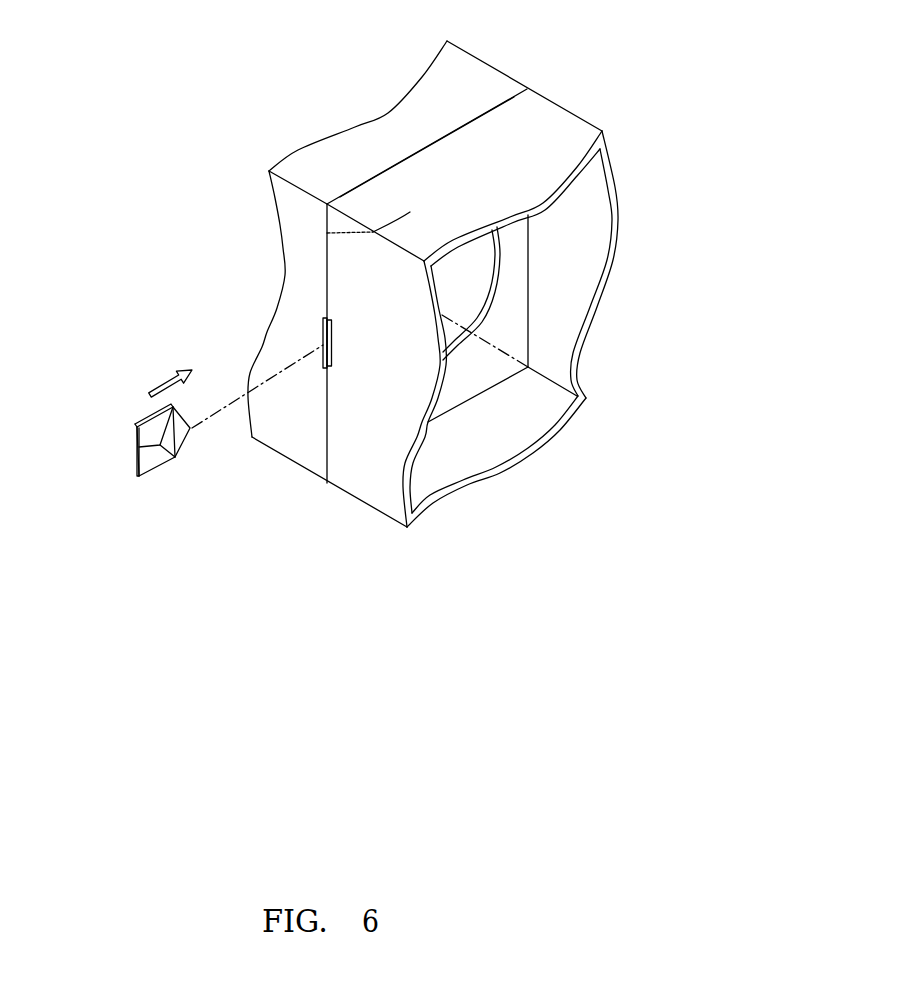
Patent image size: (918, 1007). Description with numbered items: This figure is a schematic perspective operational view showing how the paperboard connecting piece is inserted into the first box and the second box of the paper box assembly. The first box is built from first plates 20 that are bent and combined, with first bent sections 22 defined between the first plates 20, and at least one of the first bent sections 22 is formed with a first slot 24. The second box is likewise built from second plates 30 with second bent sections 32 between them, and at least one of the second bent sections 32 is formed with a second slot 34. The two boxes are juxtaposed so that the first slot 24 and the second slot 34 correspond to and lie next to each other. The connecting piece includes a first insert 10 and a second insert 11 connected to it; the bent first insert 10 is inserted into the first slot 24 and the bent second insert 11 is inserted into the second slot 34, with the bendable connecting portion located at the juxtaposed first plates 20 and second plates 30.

The first insert 10 is at (137, 437).
The second insert 11 is at (175, 440).
The first plates 20 is at (305, 443).
The first bent sections 22 is at (327, 268).
The first slot 24 is at (323, 343).
The second plates 30 is at (377, 487).
The second bent sections 32 is at (420, 165).
The second slot 34 is at (332, 345).